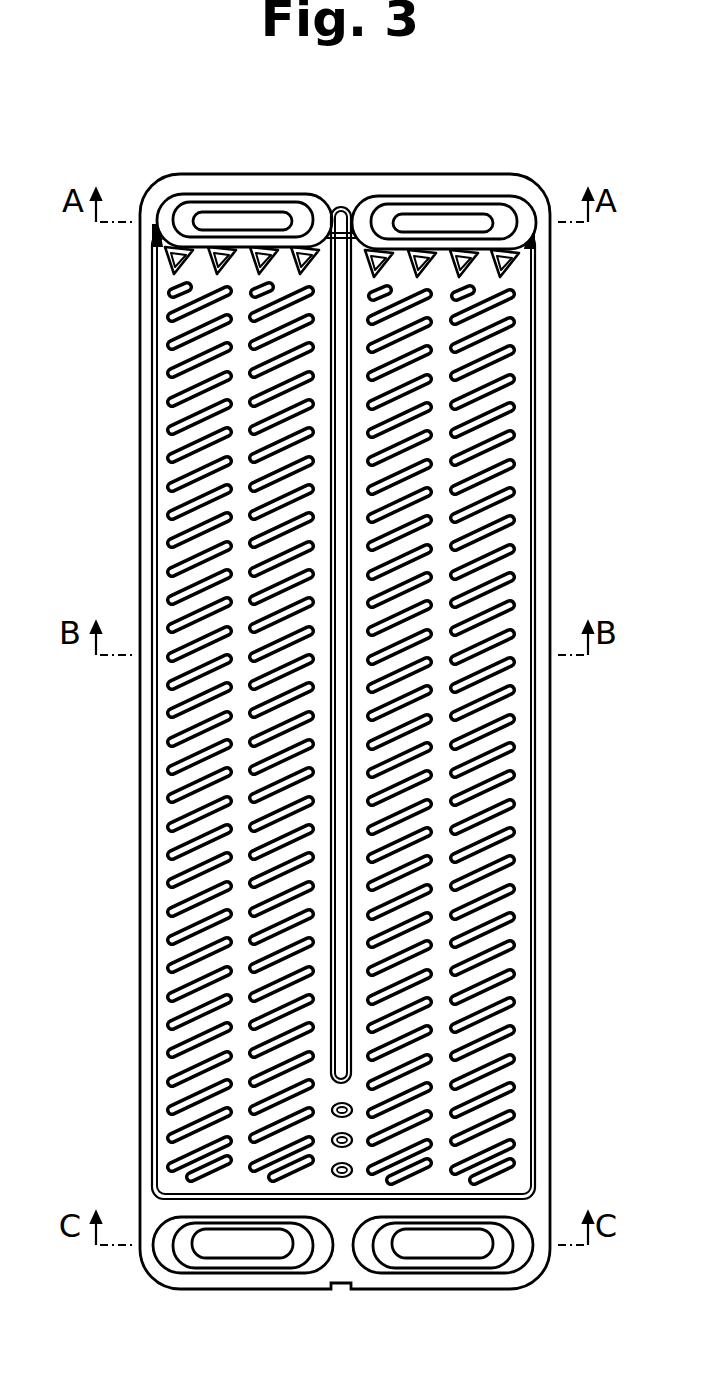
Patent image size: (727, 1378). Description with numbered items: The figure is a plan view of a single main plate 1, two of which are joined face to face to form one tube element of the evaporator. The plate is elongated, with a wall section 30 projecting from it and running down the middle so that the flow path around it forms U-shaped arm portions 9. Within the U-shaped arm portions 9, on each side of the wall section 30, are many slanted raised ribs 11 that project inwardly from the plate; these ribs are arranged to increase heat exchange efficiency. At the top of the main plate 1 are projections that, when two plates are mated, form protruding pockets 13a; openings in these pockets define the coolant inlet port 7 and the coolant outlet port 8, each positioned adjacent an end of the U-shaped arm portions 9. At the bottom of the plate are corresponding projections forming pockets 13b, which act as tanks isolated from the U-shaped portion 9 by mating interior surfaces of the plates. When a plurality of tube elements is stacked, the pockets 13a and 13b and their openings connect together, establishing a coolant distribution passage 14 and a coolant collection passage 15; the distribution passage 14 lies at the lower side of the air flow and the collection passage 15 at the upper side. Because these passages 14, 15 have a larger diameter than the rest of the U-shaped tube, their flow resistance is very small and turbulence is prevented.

The main plate 1 is at (560, 454).
The coolant inlet port 7 is at (478, 222).
The coolant outlet port 8 is at (200, 218).
The U-shaped arm portion 9 is at (165, 893).
The slanted raised ribs 11 is at (172, 513).
The pocket 13a is at (250, 182).
The pocket 13b is at (218, 1282).
The coolant distribution passage 14 is at (420, 222).
The coolant collection passage 15 is at (270, 218).
The wall section 30 is at (341, 918).